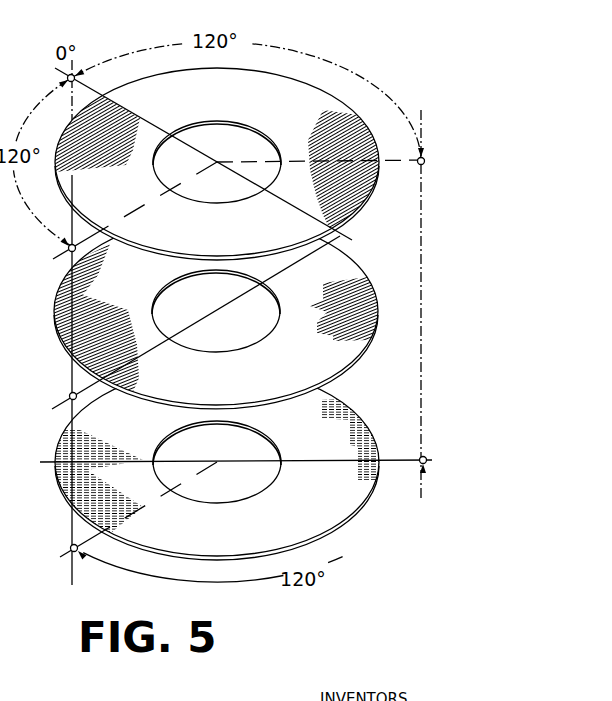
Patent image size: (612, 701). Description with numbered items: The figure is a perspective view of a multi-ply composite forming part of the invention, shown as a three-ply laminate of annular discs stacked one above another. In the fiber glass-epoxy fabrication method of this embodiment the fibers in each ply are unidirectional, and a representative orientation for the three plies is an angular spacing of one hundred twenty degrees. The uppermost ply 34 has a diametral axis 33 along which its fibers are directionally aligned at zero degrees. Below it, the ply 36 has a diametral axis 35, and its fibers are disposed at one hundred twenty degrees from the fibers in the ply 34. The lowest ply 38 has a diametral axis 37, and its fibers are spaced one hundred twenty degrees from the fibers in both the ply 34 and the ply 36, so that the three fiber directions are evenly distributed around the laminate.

The diametral axis 33 is at (242, 141).
The ply 34 is at (346, 76).
The diametral axis 35 is at (223, 312).
The ply 36 is at (333, 268).
The diametral axis 37 is at (236, 464).
The ply 38 is at (328, 423).